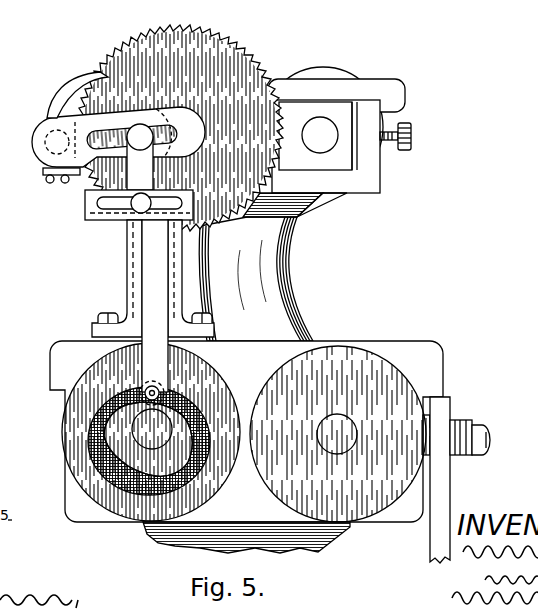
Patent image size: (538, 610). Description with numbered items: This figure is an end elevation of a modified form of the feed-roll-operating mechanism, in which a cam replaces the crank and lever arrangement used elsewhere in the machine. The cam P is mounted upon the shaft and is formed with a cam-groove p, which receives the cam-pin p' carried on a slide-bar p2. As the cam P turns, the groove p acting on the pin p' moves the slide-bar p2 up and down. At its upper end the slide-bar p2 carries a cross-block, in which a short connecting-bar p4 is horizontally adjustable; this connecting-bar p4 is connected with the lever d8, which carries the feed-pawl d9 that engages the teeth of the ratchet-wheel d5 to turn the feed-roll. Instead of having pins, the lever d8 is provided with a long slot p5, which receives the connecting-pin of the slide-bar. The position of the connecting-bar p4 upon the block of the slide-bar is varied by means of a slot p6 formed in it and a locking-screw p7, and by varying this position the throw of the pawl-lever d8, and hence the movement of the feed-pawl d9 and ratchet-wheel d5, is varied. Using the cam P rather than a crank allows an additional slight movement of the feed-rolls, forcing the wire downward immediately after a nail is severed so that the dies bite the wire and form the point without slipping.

The ratchet wheel d5 is at (107, 130).
The lever d8 is at (118, 145).
The feed-pawl d9 is at (71, 97).
The connecting-bar p4 is at (140, 167).
The long slot p5 is at (103, 213).
The slot p6 is at (103, 201).
The locking-screw p7 is at (137, 208).
The slide-bar p2 is at (150, 265).
The cam-pin p' is at (112, 376).
The cam P is at (217, 383).
The cam-groove p is at (123, 441).